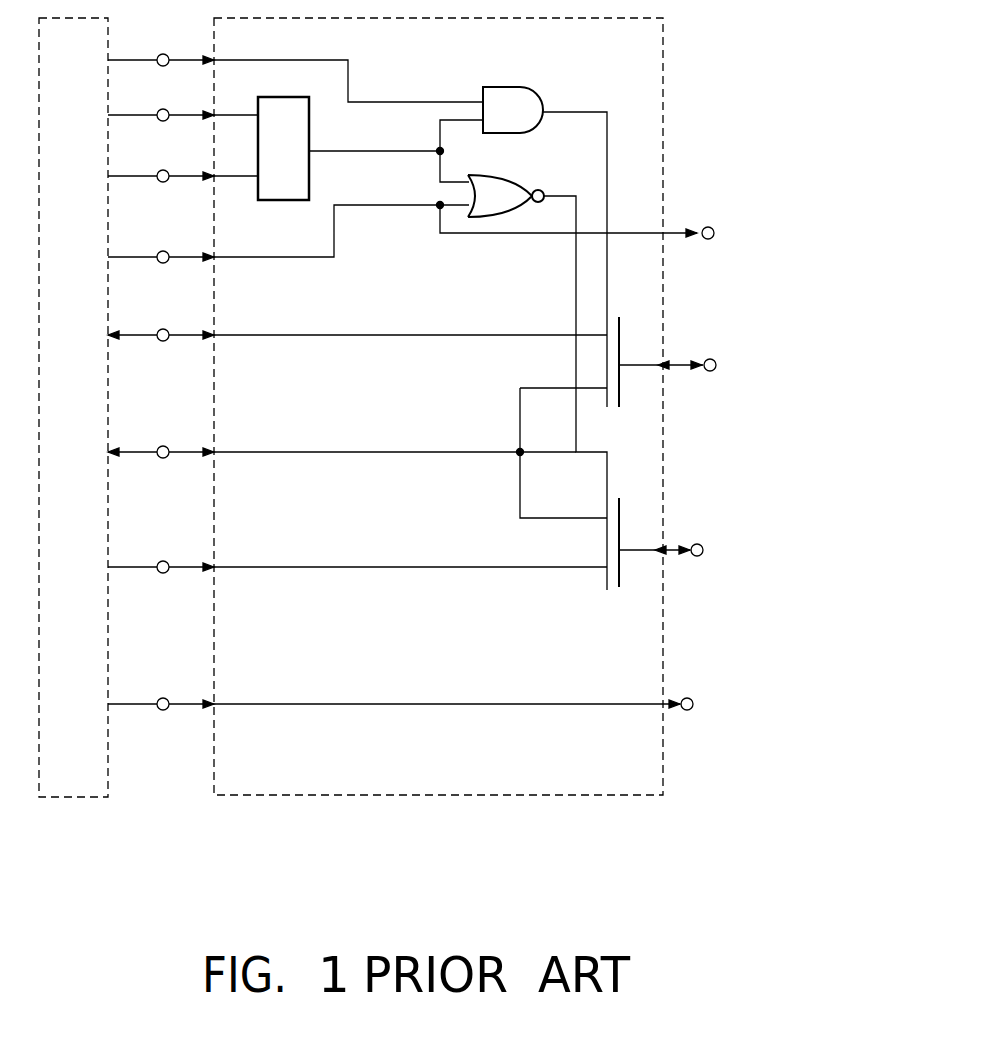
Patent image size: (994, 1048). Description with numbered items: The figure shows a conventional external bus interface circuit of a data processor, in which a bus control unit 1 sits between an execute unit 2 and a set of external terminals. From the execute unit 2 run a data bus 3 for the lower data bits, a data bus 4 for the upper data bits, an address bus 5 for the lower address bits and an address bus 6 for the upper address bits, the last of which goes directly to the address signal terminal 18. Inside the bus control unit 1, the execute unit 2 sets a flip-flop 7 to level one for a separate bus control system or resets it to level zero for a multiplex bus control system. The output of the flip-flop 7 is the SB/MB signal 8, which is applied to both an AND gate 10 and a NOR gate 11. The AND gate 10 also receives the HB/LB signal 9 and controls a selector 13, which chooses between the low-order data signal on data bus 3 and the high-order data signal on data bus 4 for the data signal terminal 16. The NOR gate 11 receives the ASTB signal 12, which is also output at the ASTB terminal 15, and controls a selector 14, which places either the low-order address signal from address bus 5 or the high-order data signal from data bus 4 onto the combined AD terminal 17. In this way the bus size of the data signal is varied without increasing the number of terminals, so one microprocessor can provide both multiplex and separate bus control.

The bus control unit 1 is at (287, 796).
The execute unit 2 is at (71, 797).
The data bus for lower data bits 3 is at (362, 334).
The data bus for upper data bits 4 is at (360, 450).
The address bus for lower address bits 5 is at (356, 566).
The address bus for upper address bits 6 is at (352, 704).
The flip-flop 7 is at (279, 201).
The SB/MB signal 8 is at (326, 150).
The HB/LB signal 9 is at (367, 100).
The AND gate 10 is at (523, 95).
The NOR gate 11 is at (508, 183).
The ASTB signal 12 is at (337, 229).
The selector 13 is at (619, 345).
The selector 14 is at (619, 528).
The ASTB terminal 15 is at (715, 229).
The data signal terminal 16 is at (713, 371).
The combined AD terminal 17 is at (703, 548).
The address signal terminal 18 is at (694, 700).